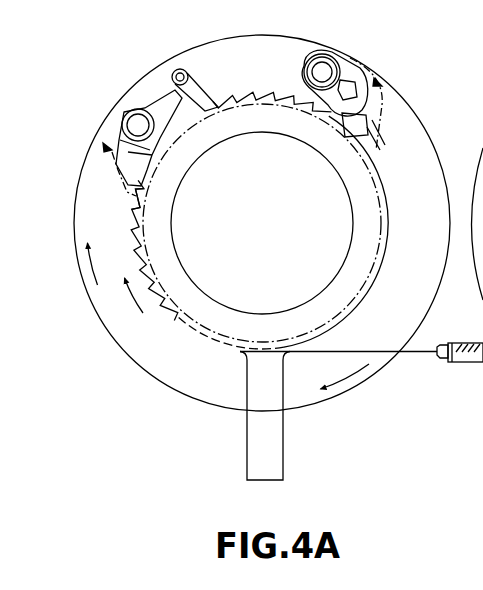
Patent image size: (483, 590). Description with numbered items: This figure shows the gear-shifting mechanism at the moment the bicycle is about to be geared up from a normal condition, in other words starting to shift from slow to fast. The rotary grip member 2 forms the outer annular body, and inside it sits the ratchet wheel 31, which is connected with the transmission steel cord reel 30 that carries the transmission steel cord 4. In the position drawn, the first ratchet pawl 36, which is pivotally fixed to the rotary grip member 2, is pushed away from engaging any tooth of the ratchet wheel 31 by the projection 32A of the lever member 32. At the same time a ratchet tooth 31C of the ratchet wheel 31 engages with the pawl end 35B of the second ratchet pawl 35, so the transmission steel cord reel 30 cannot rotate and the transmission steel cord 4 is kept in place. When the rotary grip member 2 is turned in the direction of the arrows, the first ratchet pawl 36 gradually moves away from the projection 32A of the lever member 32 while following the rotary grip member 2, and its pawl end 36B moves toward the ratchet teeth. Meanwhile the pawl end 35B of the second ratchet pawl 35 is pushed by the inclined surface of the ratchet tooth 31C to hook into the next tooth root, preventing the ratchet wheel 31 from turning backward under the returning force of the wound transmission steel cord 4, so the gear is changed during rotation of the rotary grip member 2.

The rotary grip member 2 is at (398, 108).
The transmission steel cord reel 30 is at (390, 203).
The ratchet wheel 31 is at (370, 293).
The ratchet tooth 31C is at (143, 230).
The lever member 32 is at (273, 393).
The projection 32A is at (262, 100).
The second ratchet pawl 35 is at (140, 107).
The pawl end 35B is at (118, 188).
The first ratchet pawl 36 is at (307, 55).
The pawl end 36B is at (357, 62).
The transmission steel cord 4 is at (462, 363).